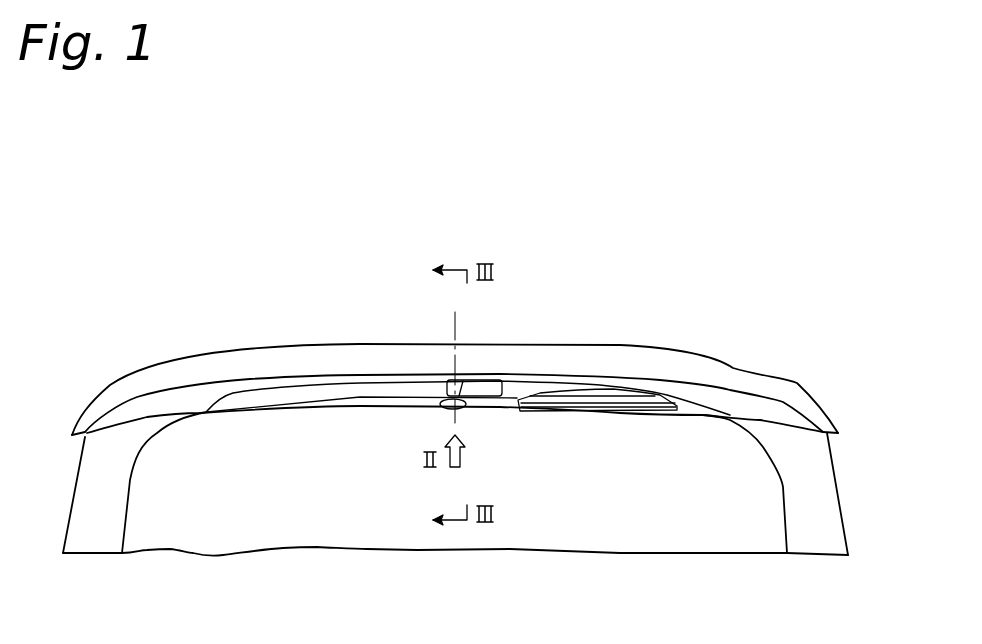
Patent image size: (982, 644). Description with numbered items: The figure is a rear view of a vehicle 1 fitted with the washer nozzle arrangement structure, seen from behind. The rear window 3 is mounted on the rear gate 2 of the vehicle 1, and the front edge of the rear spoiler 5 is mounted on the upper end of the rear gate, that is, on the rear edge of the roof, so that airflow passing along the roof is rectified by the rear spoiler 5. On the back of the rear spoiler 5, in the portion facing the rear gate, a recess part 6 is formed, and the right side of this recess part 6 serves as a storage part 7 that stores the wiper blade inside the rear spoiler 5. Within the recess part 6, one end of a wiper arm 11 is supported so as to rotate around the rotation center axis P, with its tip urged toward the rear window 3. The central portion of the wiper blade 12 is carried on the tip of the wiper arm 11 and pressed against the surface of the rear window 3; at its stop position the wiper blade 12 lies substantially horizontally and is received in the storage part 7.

The vehicle 1 is at (830, 403).
The rear gate 2 is at (97, 543).
The rear window 3 is at (443, 535).
The rear spoiler 5 is at (733, 368).
The recess part 6 is at (337, 385).
The storage part 7 is at (678, 413).
The wiper arm 11 is at (490, 398).
The wiper blade 12 is at (617, 410).